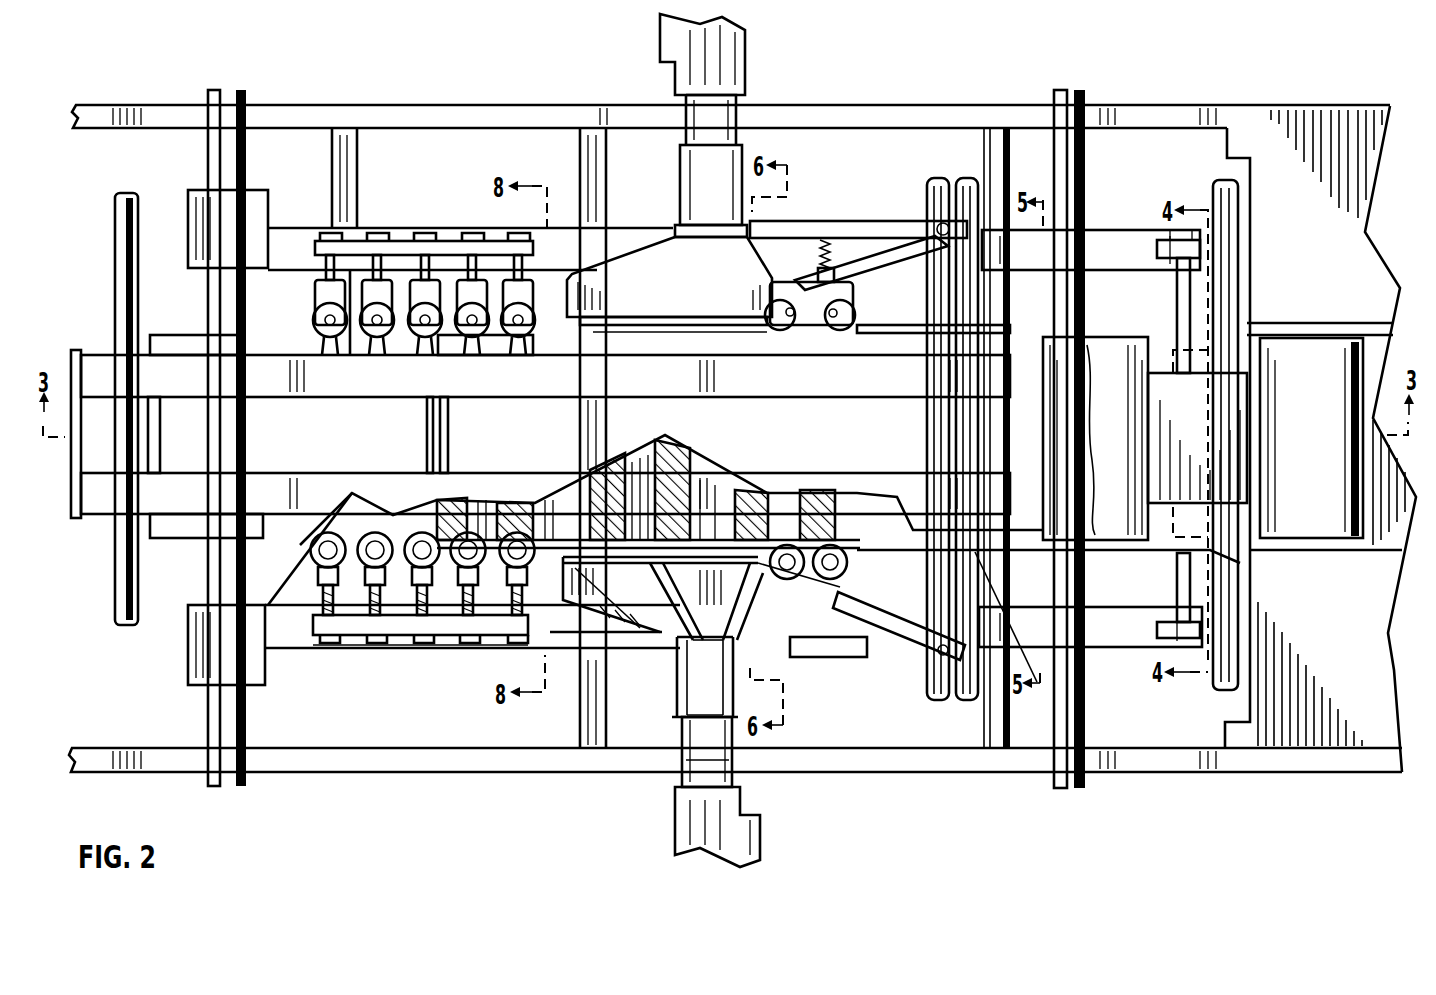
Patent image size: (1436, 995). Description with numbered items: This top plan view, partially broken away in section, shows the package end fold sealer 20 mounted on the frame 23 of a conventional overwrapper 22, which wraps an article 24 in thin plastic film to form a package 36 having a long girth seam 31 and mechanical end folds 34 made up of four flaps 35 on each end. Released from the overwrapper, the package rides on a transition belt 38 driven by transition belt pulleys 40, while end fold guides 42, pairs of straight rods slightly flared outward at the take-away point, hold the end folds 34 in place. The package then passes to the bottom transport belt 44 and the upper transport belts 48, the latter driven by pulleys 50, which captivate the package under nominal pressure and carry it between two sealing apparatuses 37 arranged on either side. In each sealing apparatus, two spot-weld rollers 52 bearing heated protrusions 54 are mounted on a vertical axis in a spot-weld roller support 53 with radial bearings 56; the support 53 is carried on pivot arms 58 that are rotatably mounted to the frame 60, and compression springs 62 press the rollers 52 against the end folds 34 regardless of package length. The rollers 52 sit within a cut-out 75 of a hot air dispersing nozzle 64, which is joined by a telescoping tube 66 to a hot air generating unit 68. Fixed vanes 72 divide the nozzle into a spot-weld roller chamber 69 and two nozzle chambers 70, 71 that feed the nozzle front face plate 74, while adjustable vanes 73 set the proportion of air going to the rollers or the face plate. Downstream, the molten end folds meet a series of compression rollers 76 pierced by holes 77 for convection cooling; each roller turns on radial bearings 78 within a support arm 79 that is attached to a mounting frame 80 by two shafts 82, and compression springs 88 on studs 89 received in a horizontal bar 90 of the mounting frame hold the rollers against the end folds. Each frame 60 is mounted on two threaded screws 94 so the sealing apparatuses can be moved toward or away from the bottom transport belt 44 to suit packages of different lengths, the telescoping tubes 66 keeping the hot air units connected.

The package end fold sealer 20 is at (1160, 89).
The overwrapper 22 is at (1278, 801).
The frame 23 is at (433, 108).
The article 24 is at (1366, 360).
The long girth seam 31 is at (1097, 333).
The mechanical end folds 34 is at (1333, 338).
The flaps 35 is at (1287, 333).
The package 36 is at (190, 335).
The sealing apparatus 37 is at (395, 204).
The transition belt 38 is at (1163, 510).
The transition belt pulleys 40 is at (1192, 446).
The end fold guides 42 is at (1165, 333).
The bottom transport belt 44 is at (586, 516).
The upper transport belts 48 is at (273, 349).
The pulleys 50 is at (100, 352).
The spot-weld rollers 52 is at (782, 325).
The spot-weld roller support 53 is at (785, 300).
The protrusions 54 is at (745, 533).
The radial bearings 56 is at (773, 305).
The pivot arms 58 is at (863, 252).
The frame 60 is at (448, 235).
The compression springs 62 is at (825, 243).
The hot air dispersing nozzle 64 is at (656, 240).
The telescoping tube 66 is at (745, 150).
The hot air generating unit 68 is at (748, 36).
The spot-weld roller chamber 69 is at (783, 615).
The nozzle chamber 70 is at (721, 627).
The nozzle chamber 71 is at (635, 600).
The fixed vanes 72 is at (680, 642).
The adjustable vanes 73 is at (705, 677).
The nozzle front face plate 74 is at (660, 641).
The cut-out 75 is at (773, 312).
The compression rollers 76 is at (376, 530).
The holes 77 is at (318, 571).
The radial bearings 78 is at (319, 305).
The support arms 79 is at (318, 318).
The mounting frame 80 is at (362, 232).
The shafts 82 is at (322, 274).
The compression springs 88 is at (518, 614).
The studs 89 is at (520, 641).
The horizontal bar 90 is at (68, 400).
The threaded screws 94 is at (241, 95).